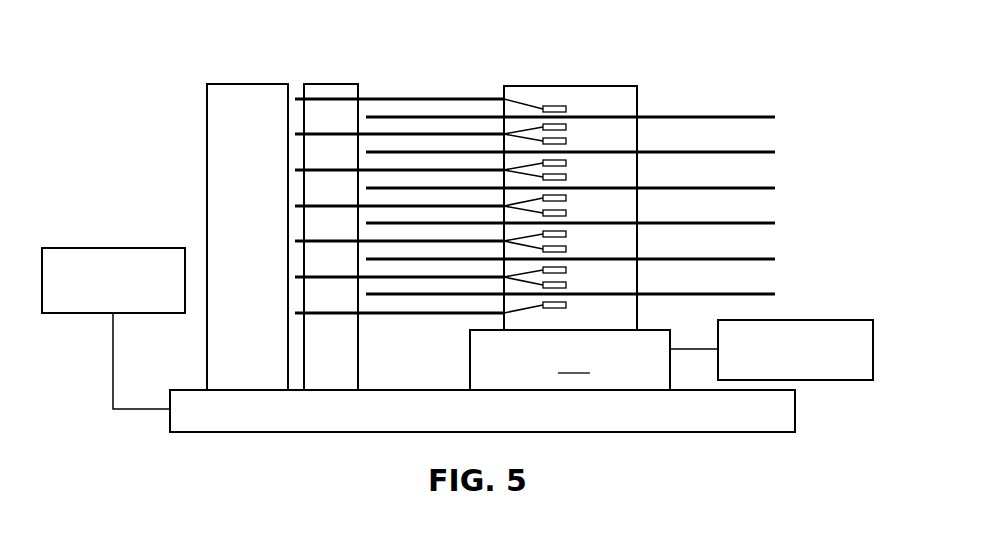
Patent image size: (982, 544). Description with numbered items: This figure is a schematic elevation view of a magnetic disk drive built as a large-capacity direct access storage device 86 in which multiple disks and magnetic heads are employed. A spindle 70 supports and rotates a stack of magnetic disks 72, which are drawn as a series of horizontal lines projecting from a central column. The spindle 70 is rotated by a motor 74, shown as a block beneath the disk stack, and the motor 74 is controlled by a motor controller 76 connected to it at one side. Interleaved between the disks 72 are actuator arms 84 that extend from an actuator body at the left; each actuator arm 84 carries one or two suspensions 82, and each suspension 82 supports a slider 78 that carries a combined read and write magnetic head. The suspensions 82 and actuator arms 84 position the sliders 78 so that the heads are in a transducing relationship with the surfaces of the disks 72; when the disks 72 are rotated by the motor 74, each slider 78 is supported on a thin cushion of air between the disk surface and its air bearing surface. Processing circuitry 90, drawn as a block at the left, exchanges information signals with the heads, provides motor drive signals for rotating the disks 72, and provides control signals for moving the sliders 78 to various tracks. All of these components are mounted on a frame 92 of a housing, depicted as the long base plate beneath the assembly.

The spindle 70 is at (634, 86).
The magnetic disk 72 is at (765, 118).
The motor 74 is at (570, 360).
The motor controller 76 is at (830, 380).
The slider 78 is at (562, 127).
The suspension 82 is at (536, 137).
The actuator arm 84 is at (473, 134).
The direct access storage device (DASD) 86 is at (684, 91).
The processing circuitry 90 is at (86, 248).
The frame 92 is at (224, 432).